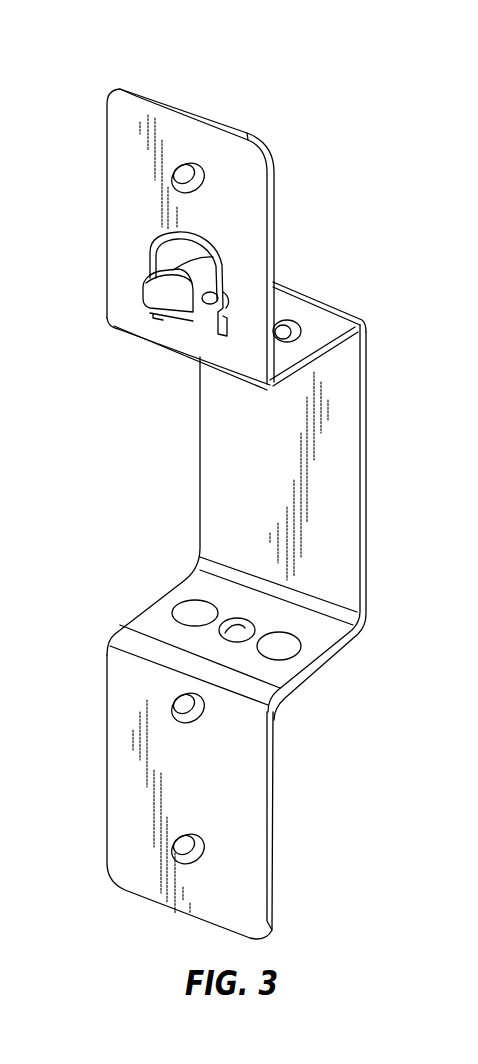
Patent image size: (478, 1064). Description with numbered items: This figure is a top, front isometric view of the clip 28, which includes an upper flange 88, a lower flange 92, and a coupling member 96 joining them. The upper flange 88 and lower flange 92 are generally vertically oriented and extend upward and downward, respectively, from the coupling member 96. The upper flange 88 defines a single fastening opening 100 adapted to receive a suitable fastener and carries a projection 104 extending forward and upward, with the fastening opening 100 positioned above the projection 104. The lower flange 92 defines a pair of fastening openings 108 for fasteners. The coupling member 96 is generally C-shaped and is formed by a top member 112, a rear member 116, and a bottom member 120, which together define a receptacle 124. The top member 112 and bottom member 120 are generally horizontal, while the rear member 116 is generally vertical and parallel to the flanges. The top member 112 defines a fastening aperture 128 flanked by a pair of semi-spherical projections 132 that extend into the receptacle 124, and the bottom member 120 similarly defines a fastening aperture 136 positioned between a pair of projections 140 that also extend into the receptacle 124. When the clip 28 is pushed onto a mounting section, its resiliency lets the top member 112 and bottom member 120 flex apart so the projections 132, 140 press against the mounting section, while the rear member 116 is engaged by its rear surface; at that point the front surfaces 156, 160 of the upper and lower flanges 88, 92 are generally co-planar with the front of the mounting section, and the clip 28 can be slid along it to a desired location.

The clip 28 is at (405, 220).
The upper flange 88 is at (186, 236).
The lower flange 92 is at (192, 797).
The coupling member 96 is at (267, 522).
The fastening opening 100 is at (172, 181).
The projection 104 is at (147, 286).
The fastening openings 108 is at (172, 712).
The top member 112 is at (267, 301).
The rear member 116 is at (362, 503).
The bottom member 120 is at (240, 624).
The receptacle 124 is at (178, 476).
The fastening aperture 128 is at (228, 296).
The projections 132 is at (290, 322).
The fastening aperture 136 is at (220, 635).
The projections 140 is at (191, 605).
The front surface 156 is at (143, 238).
The front surface 160 is at (242, 788).